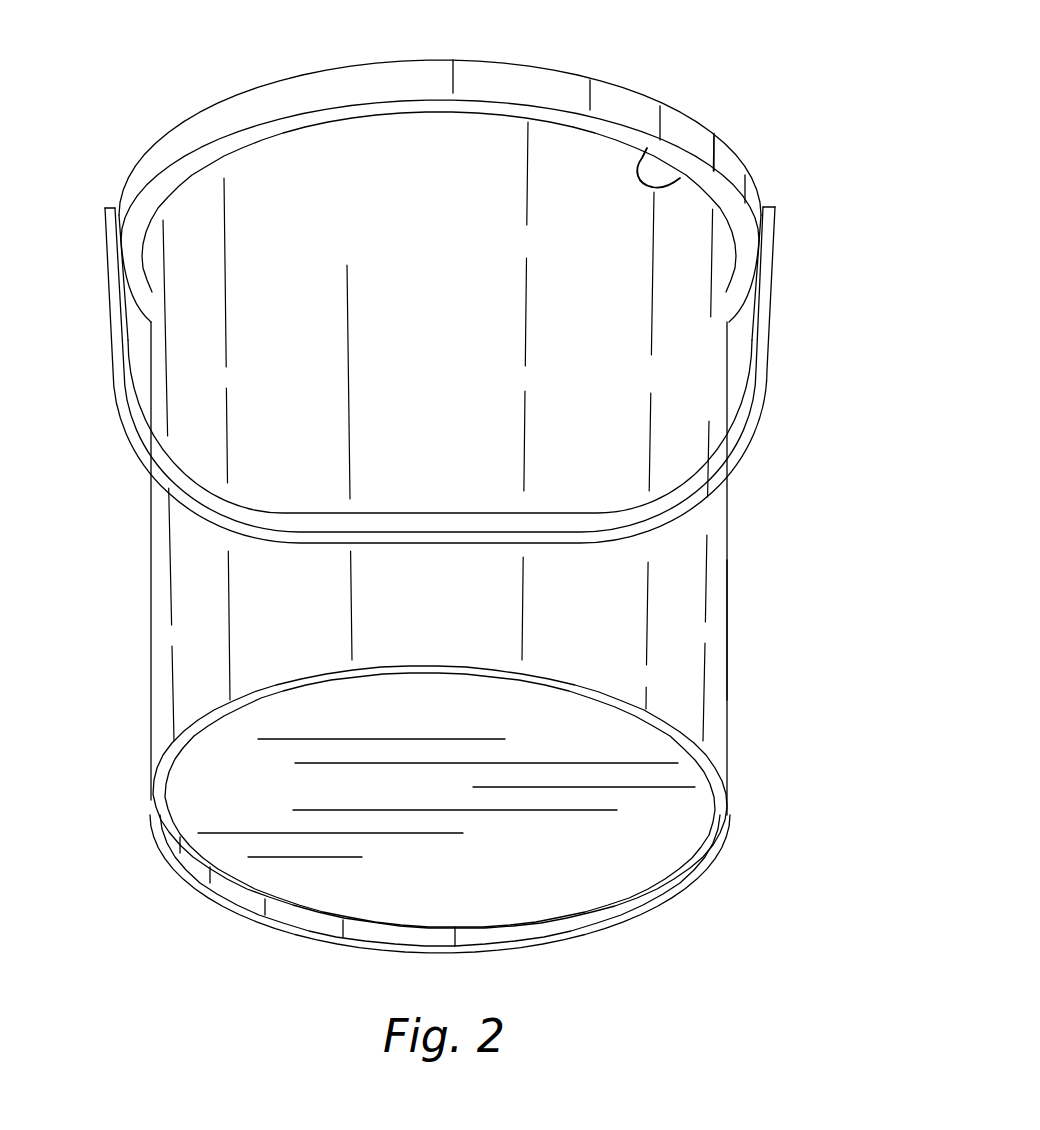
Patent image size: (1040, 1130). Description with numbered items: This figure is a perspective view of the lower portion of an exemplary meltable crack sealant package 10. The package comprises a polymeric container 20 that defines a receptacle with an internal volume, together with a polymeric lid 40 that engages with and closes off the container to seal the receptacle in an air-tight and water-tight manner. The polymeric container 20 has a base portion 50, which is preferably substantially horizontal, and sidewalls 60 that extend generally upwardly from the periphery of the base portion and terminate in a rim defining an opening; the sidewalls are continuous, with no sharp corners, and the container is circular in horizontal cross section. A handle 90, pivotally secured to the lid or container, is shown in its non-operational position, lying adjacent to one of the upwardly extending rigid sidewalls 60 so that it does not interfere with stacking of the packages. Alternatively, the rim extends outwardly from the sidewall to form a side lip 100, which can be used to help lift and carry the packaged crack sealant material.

The crack sealant package 10 is at (84, 478).
The polymeric container 20 is at (151, 718).
The polymeric lid 40 is at (322, 80).
The base portion 50 is at (663, 885).
The sidewalls 60 is at (727, 643).
The handle 90 is at (738, 438).
The side lip 100 is at (680, 178).